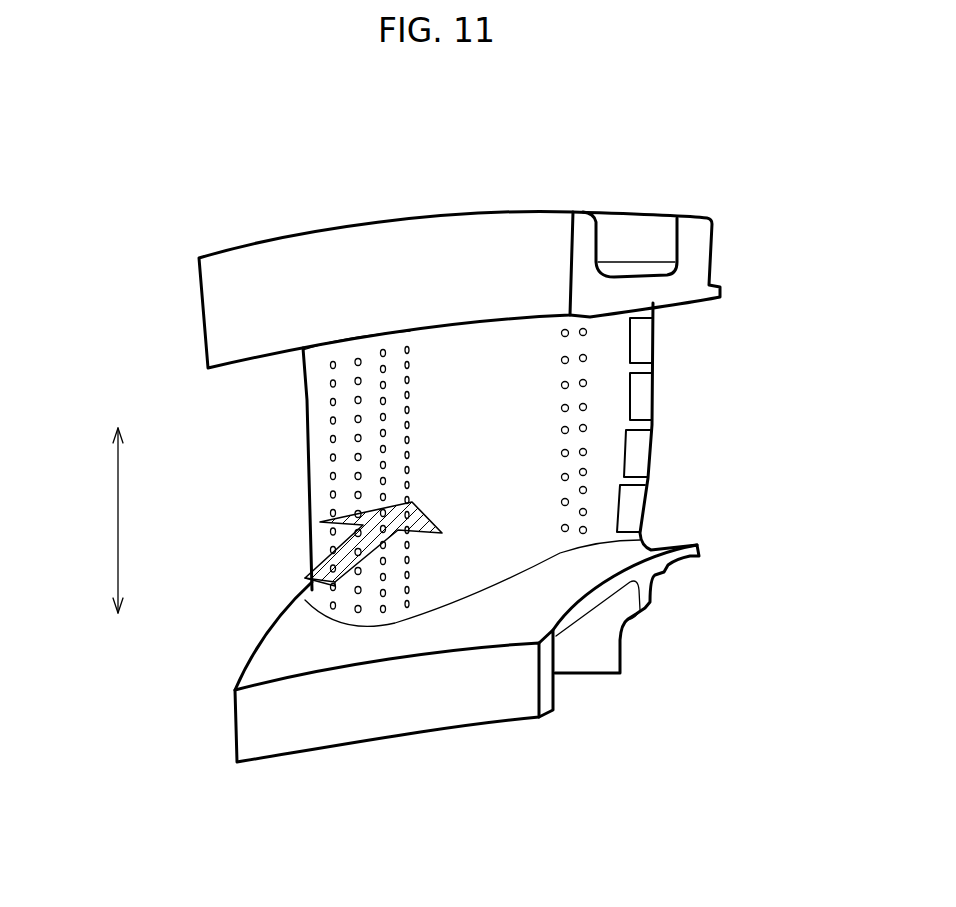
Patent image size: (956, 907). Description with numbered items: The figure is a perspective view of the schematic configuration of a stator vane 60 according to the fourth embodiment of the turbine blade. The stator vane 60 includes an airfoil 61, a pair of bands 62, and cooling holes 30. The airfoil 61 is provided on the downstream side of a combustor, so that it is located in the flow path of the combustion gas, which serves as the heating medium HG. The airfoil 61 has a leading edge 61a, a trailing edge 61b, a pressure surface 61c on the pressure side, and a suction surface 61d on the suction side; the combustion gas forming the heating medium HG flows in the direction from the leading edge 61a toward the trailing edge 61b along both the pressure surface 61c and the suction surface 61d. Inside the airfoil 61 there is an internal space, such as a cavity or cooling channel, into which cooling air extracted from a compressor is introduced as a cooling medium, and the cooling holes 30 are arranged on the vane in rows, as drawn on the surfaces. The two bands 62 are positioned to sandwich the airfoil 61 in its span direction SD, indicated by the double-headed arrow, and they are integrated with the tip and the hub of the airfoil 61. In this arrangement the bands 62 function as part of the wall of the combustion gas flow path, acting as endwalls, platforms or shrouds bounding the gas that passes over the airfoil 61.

The stator vane 60 is at (200, 205).
The bands 62 is at (455, 248).
The airfoil 61 is at (690, 350).
The leading edge 61a is at (315, 462).
The trailing edge 61b is at (653, 423).
The pressure surface 61c is at (498, 503).
The suction surface 61d is at (297, 412).
The cooling holes 30 is at (585, 407).
The heating medium HG is at (313, 557).
The span direction SD is at (98, 520).